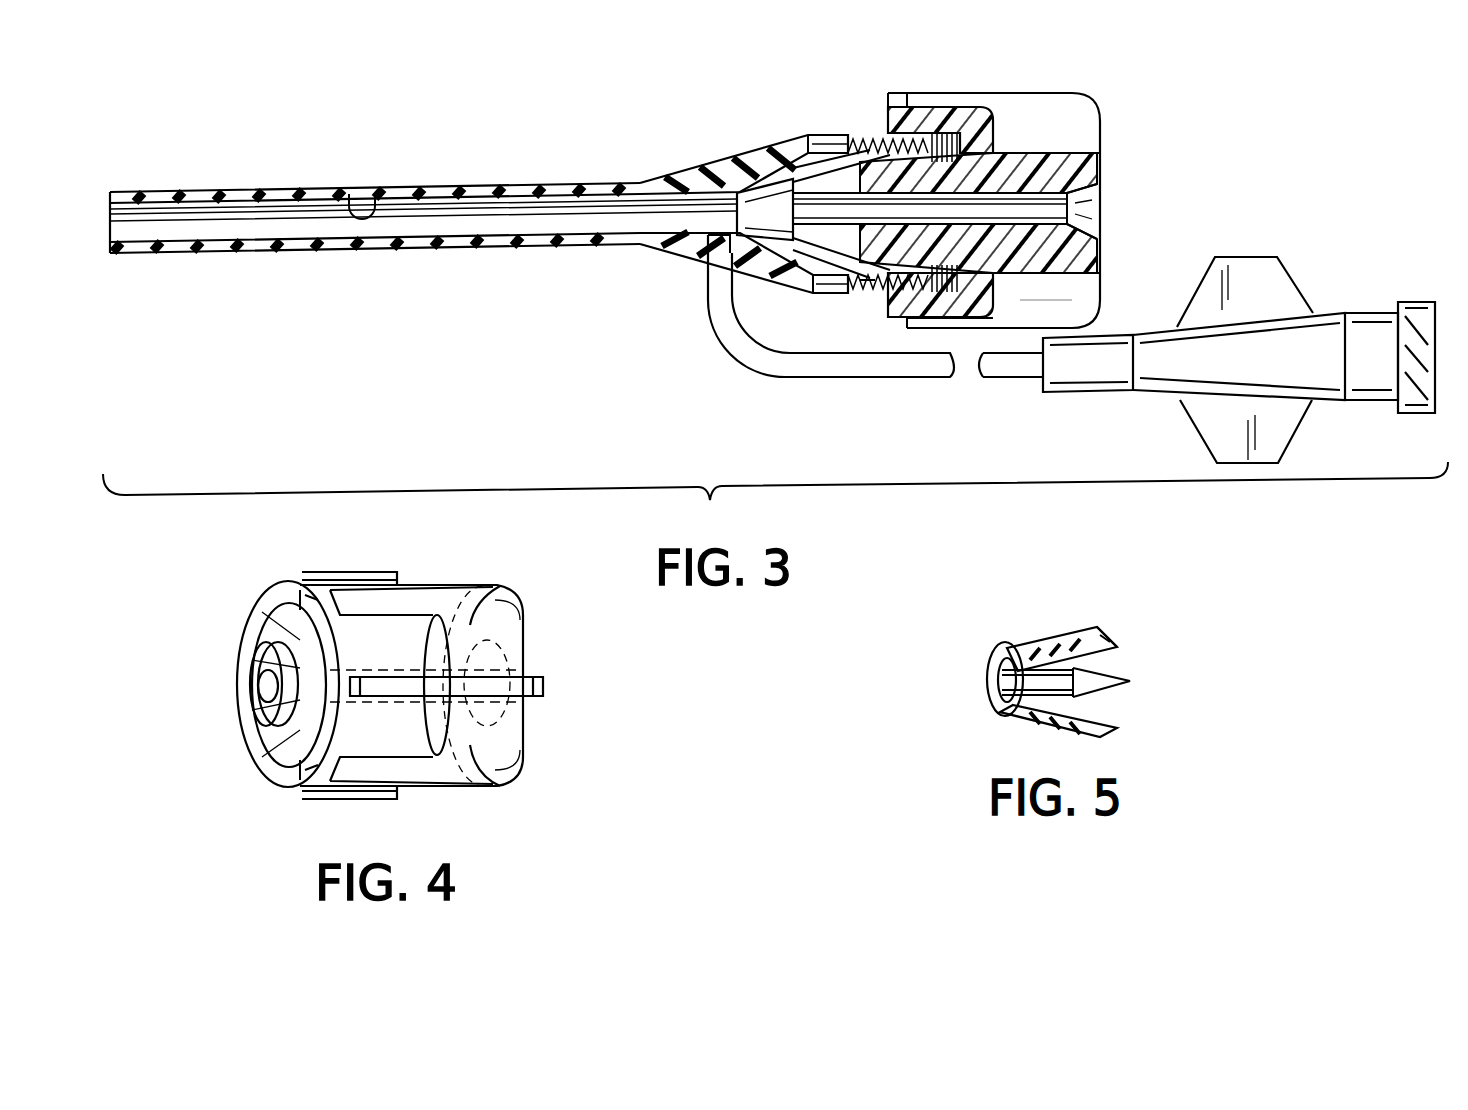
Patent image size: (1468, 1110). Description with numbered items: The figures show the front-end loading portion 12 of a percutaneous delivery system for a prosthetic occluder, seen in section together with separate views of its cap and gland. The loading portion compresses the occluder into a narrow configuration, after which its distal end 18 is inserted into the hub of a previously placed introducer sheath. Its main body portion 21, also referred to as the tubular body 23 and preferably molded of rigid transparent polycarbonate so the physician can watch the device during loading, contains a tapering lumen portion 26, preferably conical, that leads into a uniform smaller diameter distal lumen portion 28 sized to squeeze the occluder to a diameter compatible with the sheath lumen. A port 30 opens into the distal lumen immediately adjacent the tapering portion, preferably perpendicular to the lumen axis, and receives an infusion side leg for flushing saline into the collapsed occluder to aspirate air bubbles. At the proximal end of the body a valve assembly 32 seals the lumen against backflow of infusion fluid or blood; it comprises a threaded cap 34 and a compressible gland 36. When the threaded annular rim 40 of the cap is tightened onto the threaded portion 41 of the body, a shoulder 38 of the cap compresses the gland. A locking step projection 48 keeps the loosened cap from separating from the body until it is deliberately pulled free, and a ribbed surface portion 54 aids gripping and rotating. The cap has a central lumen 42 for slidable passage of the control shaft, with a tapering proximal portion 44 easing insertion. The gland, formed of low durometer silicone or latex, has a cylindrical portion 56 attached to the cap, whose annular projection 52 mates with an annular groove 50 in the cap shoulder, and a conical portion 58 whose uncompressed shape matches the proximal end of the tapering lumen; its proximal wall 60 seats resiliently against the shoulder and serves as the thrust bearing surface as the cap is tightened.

In FIG. 3, the front-end loading portion 12 is at (668, 116).
In FIG. 3, the distal end 18 is at (357, 254).
In FIG. 3, the main body portion 21 is at (720, 137).
In FIG. 3, the tubular body 23 is at (750, 144).
In FIG. 3, the tapering lumen portion 26 is at (777, 188).
In FIG. 3, the smaller diameter distal lumen portion 28 is at (387, 192).
In FIG. 3, the port 30 is at (718, 256).
In FIG. 3, the valve assembly 32 is at (853, 122).
In FIG. 3, the threaded cap 34 is at (947, 96).
In FIG. 4, the threaded cap 34 is at (453, 575).
In FIG. 3, the compressible gland 36 is at (825, 285).
In FIG. 5, the compressible gland 36 is at (1042, 729).
In FIG. 3, the shoulder 38 is at (922, 176).
In FIG. 4, the shoulder 38 is at (277, 753).
In FIG. 3, the threaded annular rim 40 is at (1016, 205).
In FIG. 4, the threaded annular rim 40 is at (347, 593).
In FIG. 3, the threaded portion 41 is at (872, 286).
In FIG. 3, the central lumen 42 is at (1045, 153).
In FIG. 4, the central lumen 42 is at (265, 692).
In FIG. 3, the tapering proximal portion 44 is at (1100, 190).
In FIG. 4, the tapering proximal portion 44 is at (503, 657).
In FIG. 3, the locking step projection 48 is at (872, 130).
In FIG. 4, the locking step projection 48 is at (265, 607).
In FIG. 4, the annular groove 50 is at (252, 655).
In FIG. 5, the annular projection 52 is at (1105, 658).
In FIG. 3, the ribbed surface portion 54 is at (1068, 305).
In FIG. 4, the ribbed surface portion 54 is at (463, 750).
In FIG. 5, the cylindrical portion 56 is at (1097, 632).
In FIG. 5, the conical portion 58 is at (1067, 632).
In FIG. 5, the proximal wall 60 is at (1131, 682).